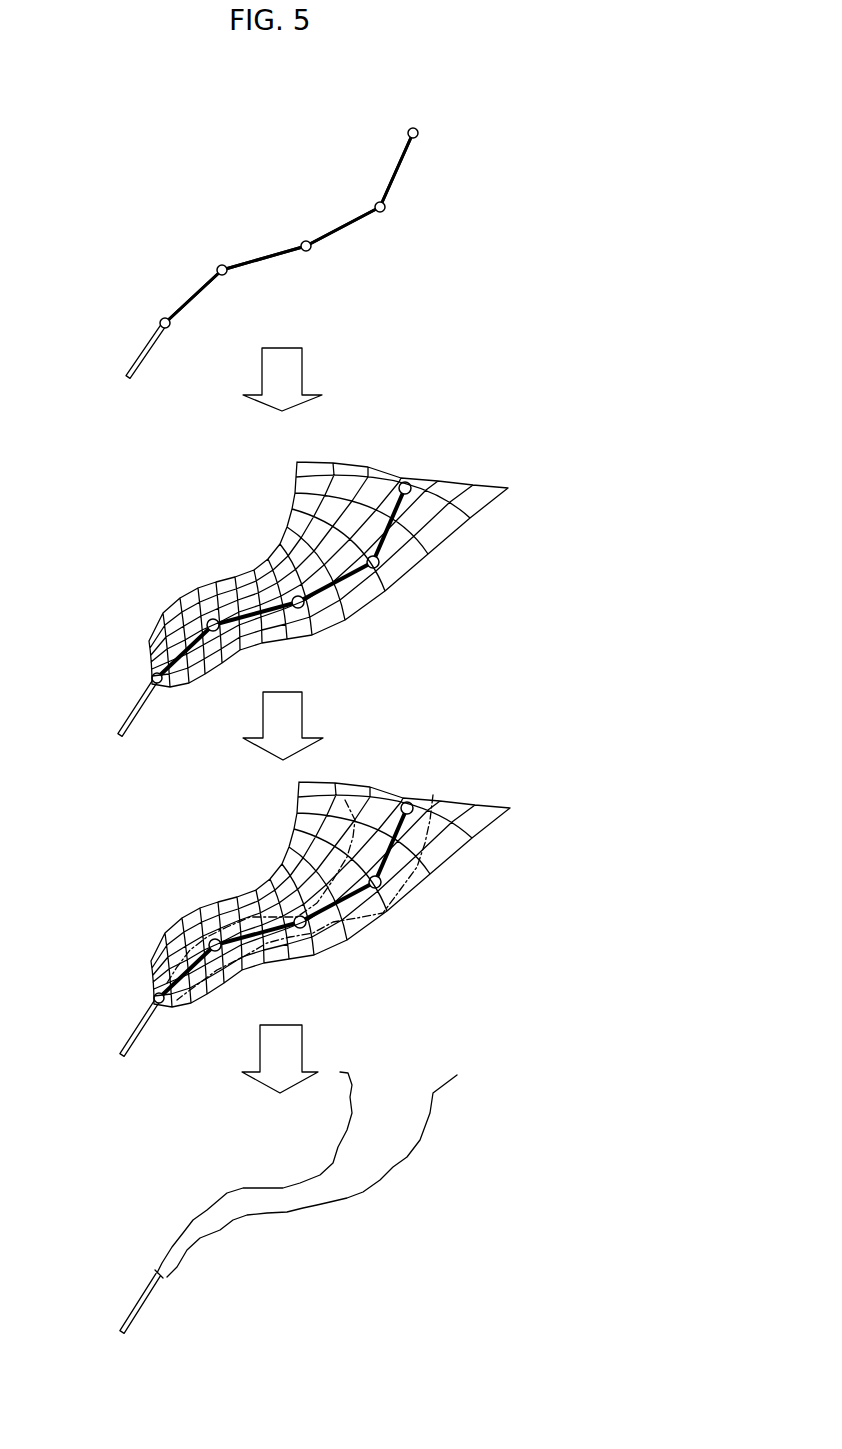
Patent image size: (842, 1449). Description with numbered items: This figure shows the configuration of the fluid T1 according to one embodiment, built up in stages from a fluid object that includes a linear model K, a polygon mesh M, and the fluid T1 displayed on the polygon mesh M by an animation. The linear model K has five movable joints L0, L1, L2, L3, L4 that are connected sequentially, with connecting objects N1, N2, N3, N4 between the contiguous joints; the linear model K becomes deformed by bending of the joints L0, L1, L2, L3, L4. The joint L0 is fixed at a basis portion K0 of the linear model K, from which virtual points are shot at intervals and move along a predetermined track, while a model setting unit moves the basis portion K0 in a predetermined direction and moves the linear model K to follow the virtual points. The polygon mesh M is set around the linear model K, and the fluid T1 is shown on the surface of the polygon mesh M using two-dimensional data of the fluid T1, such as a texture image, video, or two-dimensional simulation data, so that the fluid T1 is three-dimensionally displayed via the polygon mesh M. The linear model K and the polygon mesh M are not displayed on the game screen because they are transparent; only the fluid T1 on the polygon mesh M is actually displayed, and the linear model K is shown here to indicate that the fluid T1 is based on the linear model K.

The linear model K is at (270, 193).
The basis portion K0 is at (157, 320).
The connecting object N1 is at (197, 288).
The connecting object N2 is at (262, 255).
The connecting object N3 is at (345, 227).
The connecting object N4 is at (395, 165).
The joint L0 is at (170, 328).
The joint L1 is at (227, 275).
The joint L2 is at (310, 252).
The joint L3 is at (387, 213).
The joint L4 is at (420, 133).
The polygon mesh M is at (443, 525).
The fluid T1 is at (410, 913).